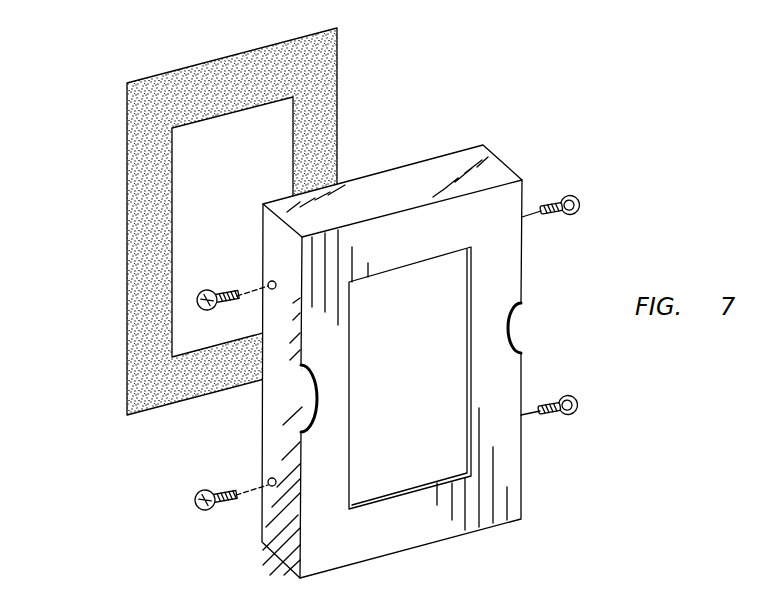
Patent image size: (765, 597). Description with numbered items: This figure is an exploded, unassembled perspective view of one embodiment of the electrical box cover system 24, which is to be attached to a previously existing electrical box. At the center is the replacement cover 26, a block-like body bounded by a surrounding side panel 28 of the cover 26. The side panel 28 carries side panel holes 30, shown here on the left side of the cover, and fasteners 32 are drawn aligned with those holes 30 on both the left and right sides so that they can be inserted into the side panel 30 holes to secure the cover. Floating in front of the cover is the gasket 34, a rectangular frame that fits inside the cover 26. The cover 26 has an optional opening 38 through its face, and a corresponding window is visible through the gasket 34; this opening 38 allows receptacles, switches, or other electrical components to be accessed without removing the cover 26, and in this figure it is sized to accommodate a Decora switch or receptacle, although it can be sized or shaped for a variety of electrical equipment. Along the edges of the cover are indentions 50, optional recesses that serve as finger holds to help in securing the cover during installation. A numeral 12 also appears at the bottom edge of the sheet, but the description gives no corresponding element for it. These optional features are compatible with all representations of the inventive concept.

The housing 12 is at (456, 591).
The electrical box cover system 24 is at (426, 114).
The replacement cover 26 is at (495, 350).
The surrounding side panel 28 is at (287, 533).
The side panel holes 30 is at (270, 281).
The fasteners 32 is at (571, 196).
The gasket 34 is at (322, 57).
The opening 38 is at (185, 163).
The indentions 50 is at (313, 392).